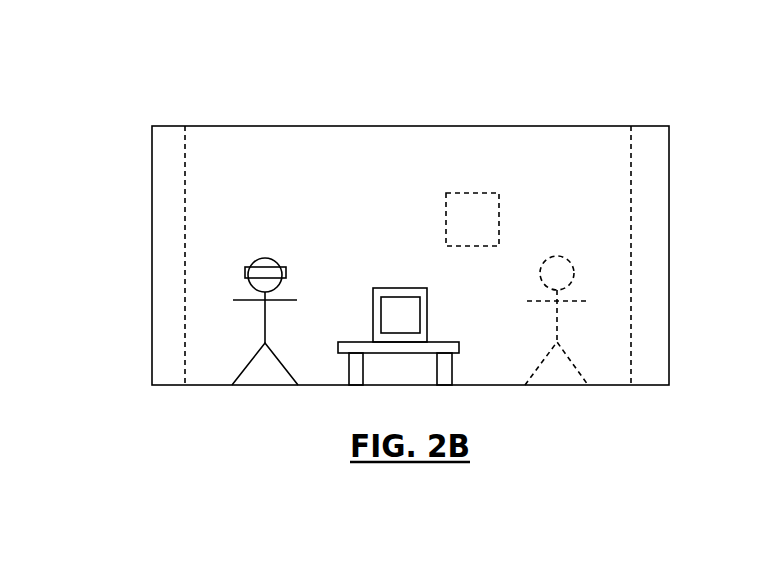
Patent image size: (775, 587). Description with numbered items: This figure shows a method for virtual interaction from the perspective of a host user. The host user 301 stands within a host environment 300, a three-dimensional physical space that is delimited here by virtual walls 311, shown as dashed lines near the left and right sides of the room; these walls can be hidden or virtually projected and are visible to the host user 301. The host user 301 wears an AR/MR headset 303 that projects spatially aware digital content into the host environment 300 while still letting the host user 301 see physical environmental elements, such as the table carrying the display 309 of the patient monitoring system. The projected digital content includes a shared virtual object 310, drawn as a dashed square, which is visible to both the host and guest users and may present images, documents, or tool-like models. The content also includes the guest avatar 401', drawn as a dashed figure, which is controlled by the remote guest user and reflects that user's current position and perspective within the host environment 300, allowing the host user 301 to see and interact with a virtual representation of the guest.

The host environment 300 is at (538, 126).
The virtual walls 311 is at (185, 172).
The virtual object 310 is at (473, 193).
The host user 301 is at (263, 321).
The AR/MR headset 303 is at (245, 270).
The display 309 is at (388, 321).
The avatar 401' is at (630, 320).